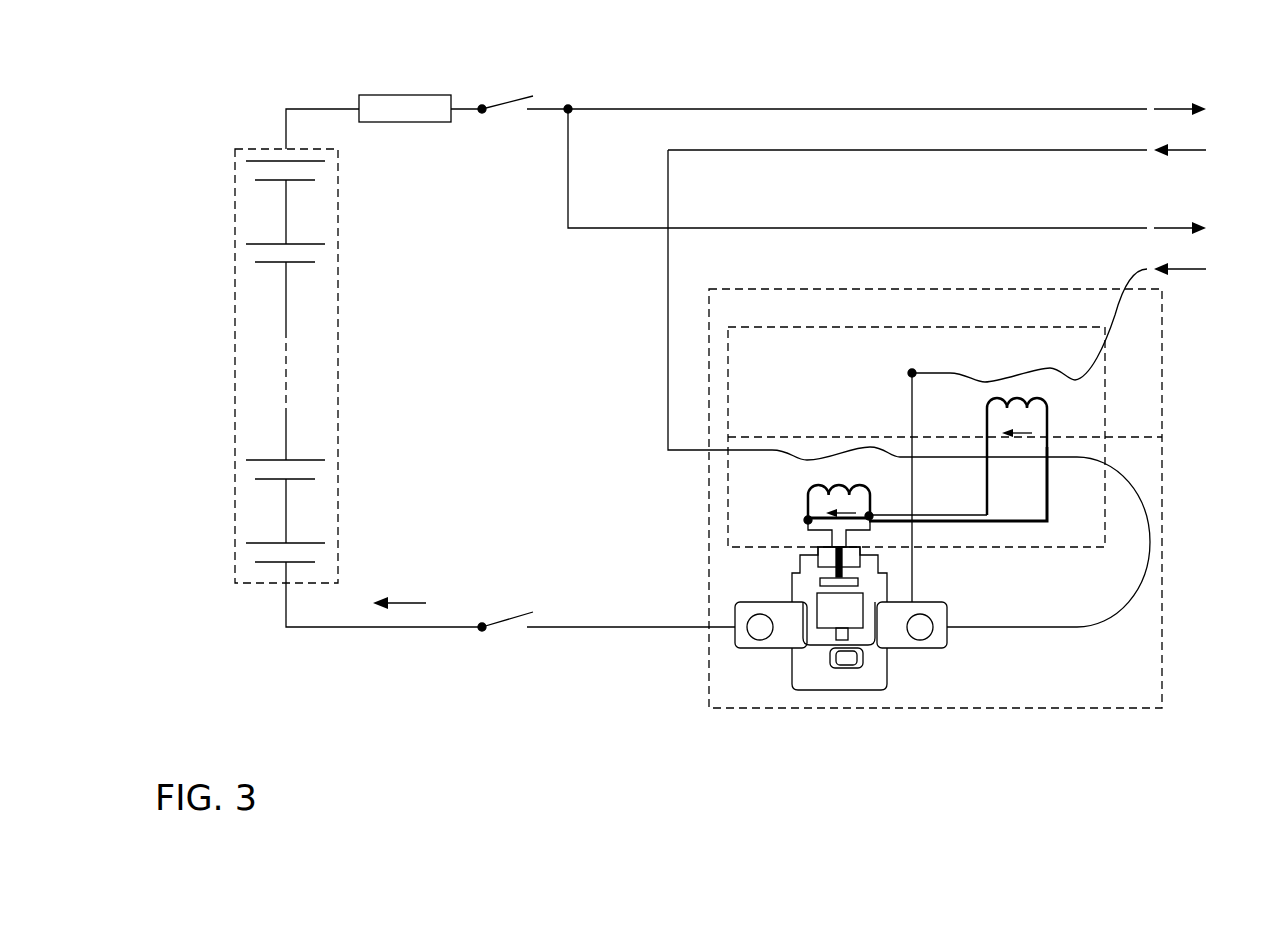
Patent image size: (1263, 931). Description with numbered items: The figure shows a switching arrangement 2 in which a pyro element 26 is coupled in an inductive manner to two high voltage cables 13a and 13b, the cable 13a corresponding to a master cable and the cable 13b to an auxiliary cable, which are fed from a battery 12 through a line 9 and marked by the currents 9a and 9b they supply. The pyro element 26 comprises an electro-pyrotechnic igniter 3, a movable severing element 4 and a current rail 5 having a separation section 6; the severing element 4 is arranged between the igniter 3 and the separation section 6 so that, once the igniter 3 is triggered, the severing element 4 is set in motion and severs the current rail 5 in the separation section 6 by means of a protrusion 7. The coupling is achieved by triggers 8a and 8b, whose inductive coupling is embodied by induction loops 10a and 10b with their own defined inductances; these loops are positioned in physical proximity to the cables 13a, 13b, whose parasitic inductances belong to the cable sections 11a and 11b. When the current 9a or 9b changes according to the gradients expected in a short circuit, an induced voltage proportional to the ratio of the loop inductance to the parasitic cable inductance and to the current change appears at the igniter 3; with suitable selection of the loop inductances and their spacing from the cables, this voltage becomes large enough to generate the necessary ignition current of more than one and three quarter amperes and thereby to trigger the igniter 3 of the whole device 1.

The switching device 1 is at (1142, 660).
The switching arrangement 2 is at (713, 73).
The electro-pyrotechnic igniter 3 is at (838, 538).
The severing element 4 is at (837, 609).
The current rail 5 is at (891, 621).
The separation section 6 is at (843, 668).
The protrusion 7 is at (843, 635).
The trigger 8a is at (1085, 507).
The trigger 8b is at (728, 327).
The main current line 9 is at (411, 603).
The current 9a is at (1168, 109).
The current 9b is at (1182, 228).
The induction loop 10a is at (863, 490).
The induction loop 10b is at (1047, 412).
The control line 11a is at (803, 447).
The control line 11b is at (981, 370).
The battery 12 is at (252, 583).
The high voltage cable 13a is at (1028, 627).
The high voltage cable 13b is at (912, 582).
The pyro element 26 is at (798, 660).